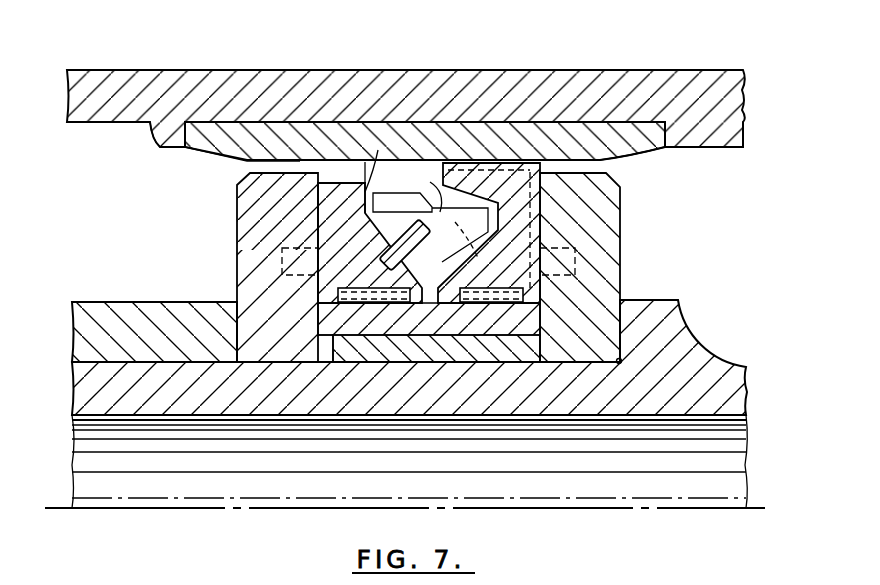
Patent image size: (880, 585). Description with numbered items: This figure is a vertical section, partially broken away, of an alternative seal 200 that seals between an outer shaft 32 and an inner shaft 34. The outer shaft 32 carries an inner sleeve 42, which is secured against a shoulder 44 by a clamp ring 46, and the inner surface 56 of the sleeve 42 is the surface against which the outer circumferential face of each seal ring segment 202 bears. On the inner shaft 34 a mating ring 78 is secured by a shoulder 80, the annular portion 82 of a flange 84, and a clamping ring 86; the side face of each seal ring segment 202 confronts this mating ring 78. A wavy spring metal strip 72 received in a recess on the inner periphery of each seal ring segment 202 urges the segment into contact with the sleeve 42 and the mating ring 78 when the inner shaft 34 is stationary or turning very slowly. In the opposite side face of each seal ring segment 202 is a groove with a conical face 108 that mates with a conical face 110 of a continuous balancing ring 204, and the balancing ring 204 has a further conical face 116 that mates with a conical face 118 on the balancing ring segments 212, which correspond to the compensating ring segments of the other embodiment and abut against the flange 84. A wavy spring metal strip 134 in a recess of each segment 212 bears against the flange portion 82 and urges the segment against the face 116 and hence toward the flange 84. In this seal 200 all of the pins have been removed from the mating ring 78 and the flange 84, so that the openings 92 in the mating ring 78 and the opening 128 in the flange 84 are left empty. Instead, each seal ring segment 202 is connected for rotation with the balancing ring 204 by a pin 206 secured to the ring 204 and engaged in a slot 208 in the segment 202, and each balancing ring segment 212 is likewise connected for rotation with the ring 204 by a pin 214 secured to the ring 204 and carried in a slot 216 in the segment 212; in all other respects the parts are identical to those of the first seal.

The outer shaft 32 is at (518, 77).
The inner shaft 34 is at (665, 398).
The inner sleeve 42 is at (638, 144).
The shoulder 44 is at (160, 149).
The clamp ring 46 is at (746, 133).
The inner surface 56 is at (247, 163).
The wavy spring metal strip 72 is at (500, 297).
The mating ring 78 is at (617, 246).
The shoulder 80 is at (670, 308).
The annular portion 82 is at (486, 315).
The flange 84 is at (250, 248).
The clamping ring 86 is at (103, 320).
The openings 92 is at (575, 266).
The conical face 108 is at (433, 239).
The conical face 110 is at (494, 279).
The conical face 116 is at (392, 263).
The conical face 118 is at (375, 160).
The opening 128 is at (282, 267).
The wavy spring metal strip 134 is at (365, 294).
The seal 200 is at (625, 220).
The seal ring segments 202 is at (485, 193).
The balancing ring 204 is at (391, 174).
The pin 206 is at (463, 162).
The slot 208 is at (428, 336).
The balancing ring segments 212 is at (335, 207).
The pin 214 is at (407, 200).
The slot 216 is at (380, 248).